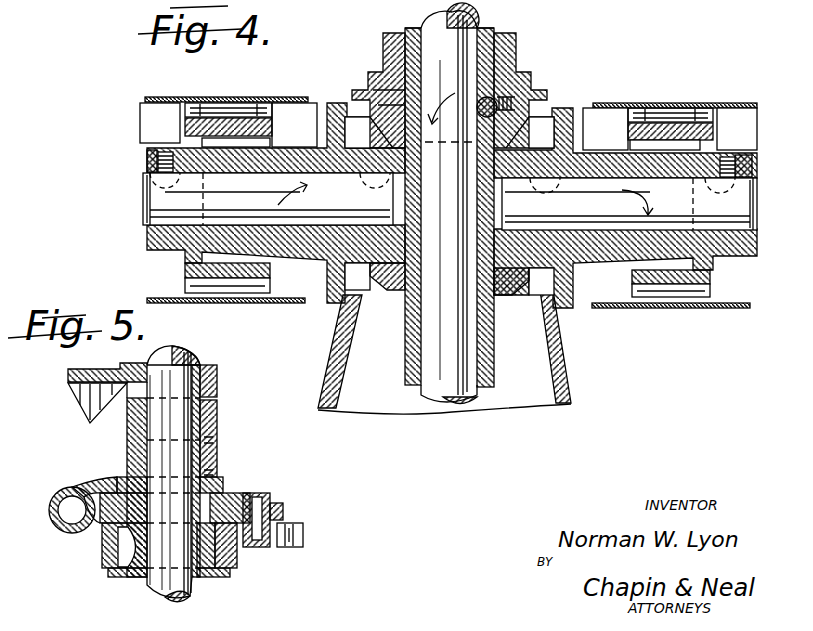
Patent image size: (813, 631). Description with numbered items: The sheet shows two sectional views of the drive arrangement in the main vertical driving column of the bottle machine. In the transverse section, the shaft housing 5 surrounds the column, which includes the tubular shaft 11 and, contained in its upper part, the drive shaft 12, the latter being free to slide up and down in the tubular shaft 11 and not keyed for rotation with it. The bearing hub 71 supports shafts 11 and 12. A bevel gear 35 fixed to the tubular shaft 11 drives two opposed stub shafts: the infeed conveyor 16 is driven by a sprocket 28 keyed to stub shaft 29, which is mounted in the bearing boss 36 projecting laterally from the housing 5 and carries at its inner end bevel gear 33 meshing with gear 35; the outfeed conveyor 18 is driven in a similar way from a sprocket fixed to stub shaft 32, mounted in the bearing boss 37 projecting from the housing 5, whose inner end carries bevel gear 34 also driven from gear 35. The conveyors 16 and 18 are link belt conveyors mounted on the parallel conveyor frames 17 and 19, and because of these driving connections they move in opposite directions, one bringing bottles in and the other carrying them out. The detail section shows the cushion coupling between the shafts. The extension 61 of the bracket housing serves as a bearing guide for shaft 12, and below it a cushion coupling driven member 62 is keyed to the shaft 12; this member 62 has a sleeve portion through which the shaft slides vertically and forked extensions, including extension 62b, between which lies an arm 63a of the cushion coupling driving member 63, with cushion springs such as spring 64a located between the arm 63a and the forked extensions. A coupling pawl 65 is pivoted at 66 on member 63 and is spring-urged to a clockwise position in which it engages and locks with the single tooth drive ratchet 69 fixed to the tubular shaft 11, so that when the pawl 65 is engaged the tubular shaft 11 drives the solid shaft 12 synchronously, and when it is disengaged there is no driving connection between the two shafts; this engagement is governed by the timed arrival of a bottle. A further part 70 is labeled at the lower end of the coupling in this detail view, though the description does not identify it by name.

In FIG. 4, the shaft housing 5 is at (547, 100).
In FIG. 4, the tubular shaft 11 is at (492, 368).
In FIG. 5, the tubular shaft 11 is at (132, 578).
In FIG. 4, the drive shaft 12 is at (433, 384).
In FIG. 5, the drive shaft 12 is at (186, 346).
In FIG. 4, the infeed conveyor 16 is at (731, 103).
In FIG. 4, the conveyor frame 17 is at (670, 129).
In FIG. 4, the outfeed conveyor 18 is at (297, 101).
In FIG. 4, the conveyor frame 19 is at (228, 125).
In FIG. 4, the sprocket 28 is at (705, 279).
In FIG. 4, the stub shaft 29 is at (185, 267).
In FIG. 4, the stub shaft 32 is at (165, 192).
In FIG. 4, the bevel gear 33 is at (518, 293).
In FIG. 4, the bevel gear 34 is at (387, 290).
In FIG. 4, the bevel gear 35 is at (386, 86).
In FIG. 4, the bearing boss 36 is at (586, 250).
In FIG. 4, the bearing boss 37 is at (301, 251).
In FIG. 4, the bearing hub 71 is at (518, 56).
In FIG. 5, the extension 61 is at (94, 397).
In FIG. 5, the cushion coupling driven member 62 is at (213, 439).
In FIG. 5, the forked extension 62b is at (90, 494).
In FIG. 5, the cushion coupling driving member 63 is at (232, 505).
In FIG. 5, the arm 63a is at (113, 545).
In FIG. 5, the cushion spring 64a is at (65, 510).
In FIG. 5, the coupling pawl 65 is at (300, 524).
In FIG. 5, the pivot 66 is at (260, 497).
In FIG. 5, the single tooth drive ratchet 69 is at (104, 560).
In FIG. 5, the washer 70 is at (225, 578).